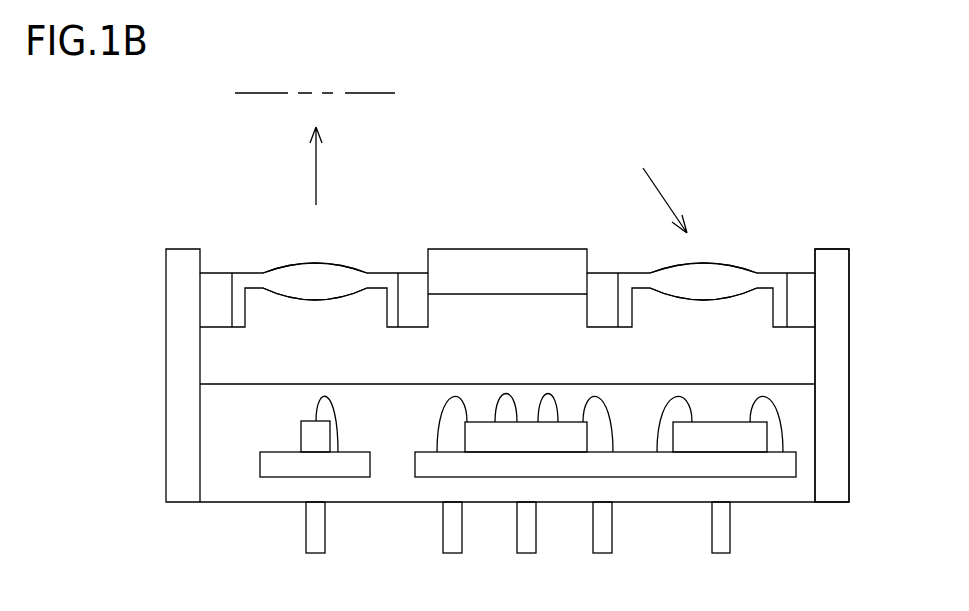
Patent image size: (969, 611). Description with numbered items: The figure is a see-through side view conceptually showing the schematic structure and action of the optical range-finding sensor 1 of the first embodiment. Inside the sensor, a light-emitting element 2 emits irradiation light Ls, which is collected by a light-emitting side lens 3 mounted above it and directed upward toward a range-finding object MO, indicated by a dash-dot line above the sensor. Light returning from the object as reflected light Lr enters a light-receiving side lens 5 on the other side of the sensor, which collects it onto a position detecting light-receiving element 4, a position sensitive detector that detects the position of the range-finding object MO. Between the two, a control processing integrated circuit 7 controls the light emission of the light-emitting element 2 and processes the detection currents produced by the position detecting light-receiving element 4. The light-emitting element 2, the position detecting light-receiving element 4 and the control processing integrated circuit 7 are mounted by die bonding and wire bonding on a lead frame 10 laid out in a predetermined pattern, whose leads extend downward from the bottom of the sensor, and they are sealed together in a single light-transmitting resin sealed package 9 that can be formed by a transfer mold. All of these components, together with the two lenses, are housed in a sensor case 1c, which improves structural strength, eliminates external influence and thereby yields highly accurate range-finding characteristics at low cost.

The optical range-finding sensor 1 is at (837, 130).
The sensor case 1c is at (837, 332).
The light-emitting element 2 is at (309, 439).
The light-emitting side lens 3 is at (293, 272).
The position detecting light-receiving element 4 is at (748, 438).
The light-receiving side lens 5 is at (722, 275).
The control processing integrated circuit 7 is at (502, 438).
The light-transmitting resin sealed package 9 is at (397, 433).
The lead frame 10 is at (342, 467).
The range-finding object MO is at (345, 91).
The irradiation light Ls is at (316, 168).
The reflected light Lr is at (663, 188).